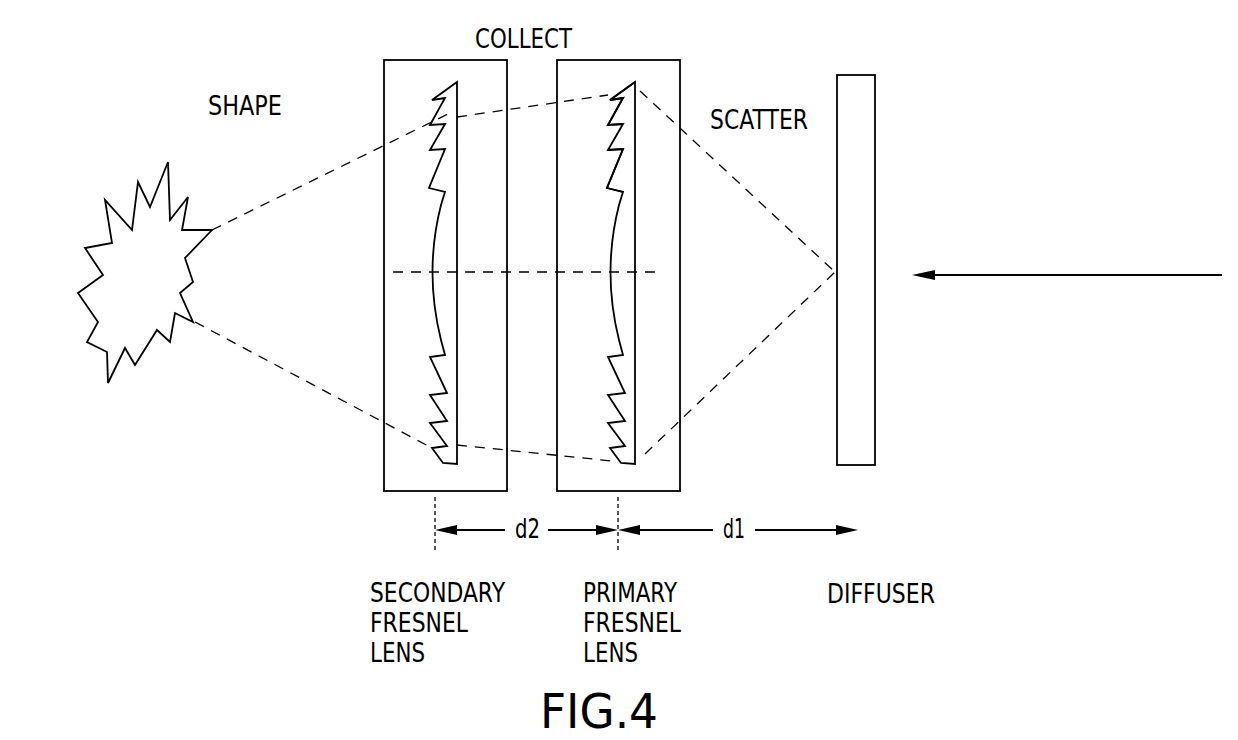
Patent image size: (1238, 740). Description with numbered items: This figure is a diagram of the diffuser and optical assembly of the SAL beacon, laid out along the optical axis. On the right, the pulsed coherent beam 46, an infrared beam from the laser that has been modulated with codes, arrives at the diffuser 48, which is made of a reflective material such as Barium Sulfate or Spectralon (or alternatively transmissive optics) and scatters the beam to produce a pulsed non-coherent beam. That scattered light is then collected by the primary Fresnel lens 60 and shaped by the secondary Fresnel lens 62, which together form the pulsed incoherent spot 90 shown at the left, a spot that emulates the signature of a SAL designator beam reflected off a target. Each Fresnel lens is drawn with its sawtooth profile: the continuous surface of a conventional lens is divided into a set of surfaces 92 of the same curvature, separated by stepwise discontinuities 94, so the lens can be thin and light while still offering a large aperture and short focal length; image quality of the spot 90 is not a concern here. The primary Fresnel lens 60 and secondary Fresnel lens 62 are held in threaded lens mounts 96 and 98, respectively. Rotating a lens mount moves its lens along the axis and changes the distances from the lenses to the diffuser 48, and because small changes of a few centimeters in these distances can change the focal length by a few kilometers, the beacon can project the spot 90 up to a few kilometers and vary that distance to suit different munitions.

The pulsed coherent beam 46 is at (1054, 257).
The diffuser 48 is at (875, 98).
The primary Fresnel lens 60 is at (660, 262).
The secondary Fresnel lens 62 is at (404, 261).
The spot 90 is at (205, 307).
The surfaces 92 is at (597, 130).
The stepwise discontinuities 94 is at (590, 188).
The threaded lens mount 96 is at (630, 60).
The threaded lens mount 98 is at (433, 60).